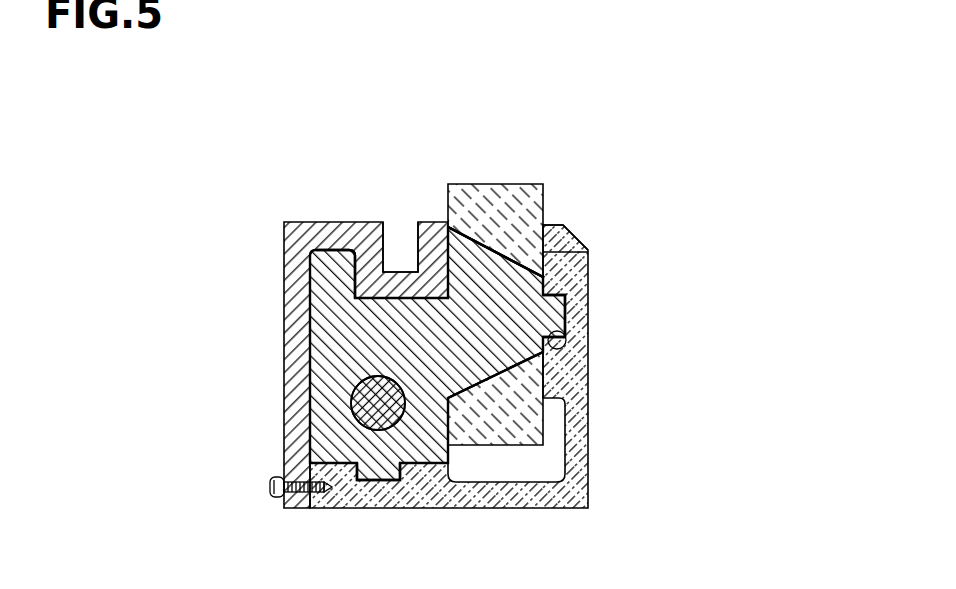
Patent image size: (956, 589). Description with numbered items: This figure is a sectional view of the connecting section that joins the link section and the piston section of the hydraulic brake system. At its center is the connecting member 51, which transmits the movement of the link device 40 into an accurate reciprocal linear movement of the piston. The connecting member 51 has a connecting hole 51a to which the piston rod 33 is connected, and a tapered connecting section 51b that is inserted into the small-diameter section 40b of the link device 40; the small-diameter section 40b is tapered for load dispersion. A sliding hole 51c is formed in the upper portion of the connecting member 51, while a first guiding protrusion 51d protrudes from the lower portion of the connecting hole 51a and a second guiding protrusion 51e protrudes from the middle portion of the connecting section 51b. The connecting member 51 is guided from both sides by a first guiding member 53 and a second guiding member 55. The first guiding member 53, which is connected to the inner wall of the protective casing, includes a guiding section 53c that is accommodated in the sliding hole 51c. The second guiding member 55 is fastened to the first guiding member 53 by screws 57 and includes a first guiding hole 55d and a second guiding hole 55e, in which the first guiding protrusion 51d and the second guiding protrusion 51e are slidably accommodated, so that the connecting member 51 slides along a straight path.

The piston rod 33 is at (370, 407).
The link device 40 is at (473, 188).
The small-diameter section 40b is at (470, 250).
The connecting member 51 is at (312, 312).
The connecting hole 51a is at (380, 388).
The connecting section 51b is at (588, 252).
The sliding hole 51c is at (368, 272).
The first guiding protrusion 51d is at (368, 482).
The second guiding protrusion 51e is at (571, 300).
The first guiding member 53 is at (284, 252).
The guiding section 53c is at (402, 283).
The second guiding member 55 is at (590, 380).
The first guiding hole 55d is at (410, 476).
The second guiding hole 55e is at (566, 340).
The screw 57 is at (271, 480).